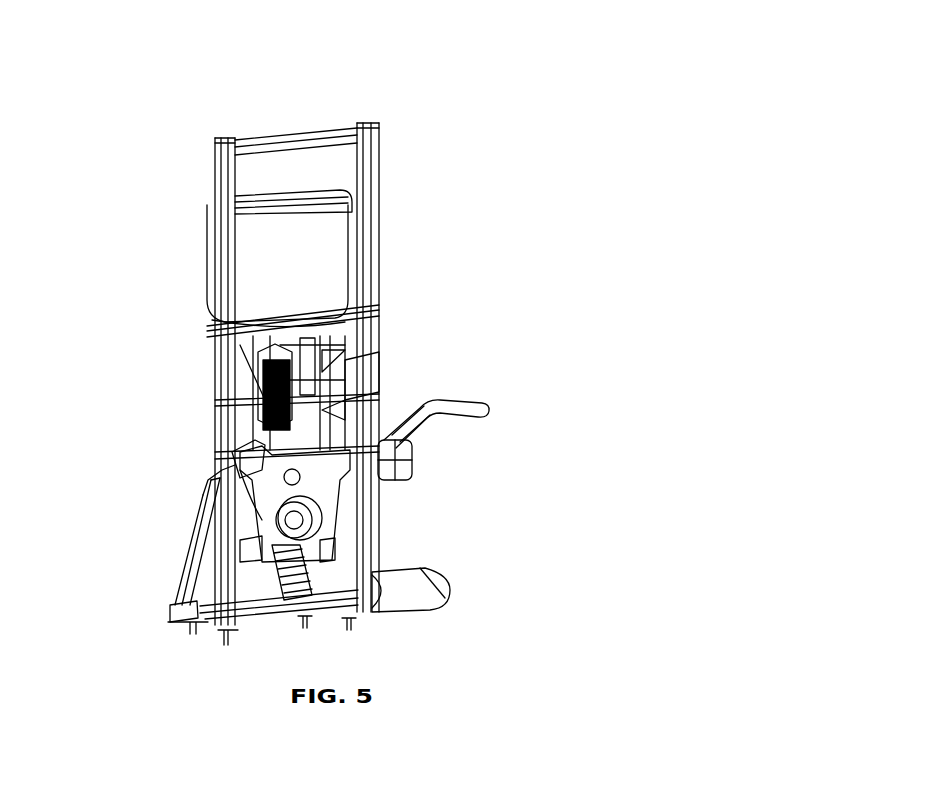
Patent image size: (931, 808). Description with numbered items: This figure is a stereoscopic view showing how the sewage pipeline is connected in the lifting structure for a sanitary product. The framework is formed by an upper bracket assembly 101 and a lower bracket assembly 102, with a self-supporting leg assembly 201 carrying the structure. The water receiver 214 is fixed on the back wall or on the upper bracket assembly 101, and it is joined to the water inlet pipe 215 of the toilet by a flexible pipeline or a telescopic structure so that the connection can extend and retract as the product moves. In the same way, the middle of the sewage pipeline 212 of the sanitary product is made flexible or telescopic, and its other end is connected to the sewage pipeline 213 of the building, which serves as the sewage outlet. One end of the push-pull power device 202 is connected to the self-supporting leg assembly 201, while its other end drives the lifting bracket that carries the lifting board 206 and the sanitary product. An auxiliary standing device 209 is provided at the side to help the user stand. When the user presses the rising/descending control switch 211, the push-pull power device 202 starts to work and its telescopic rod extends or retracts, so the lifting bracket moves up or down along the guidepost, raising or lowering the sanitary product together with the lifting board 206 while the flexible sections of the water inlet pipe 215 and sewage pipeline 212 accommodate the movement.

The upper bracket assembly 101 is at (225, 185).
The lower bracket assembly 102 is at (240, 455).
The self-supporting leg assembly 201 is at (186, 566).
The push-pull power device 202 is at (352, 332).
The lifting board 206 is at (280, 521).
The auxiliary standing device 209 is at (456, 400).
The control switch 211 is at (365, 383).
The sewage pipeline of sanitary product 212 is at (252, 543).
The sewage pipeline of building 213 is at (405, 603).
The water receiver 214 is at (298, 266).
The water inlet pipe of sanitary product 215 is at (268, 378).